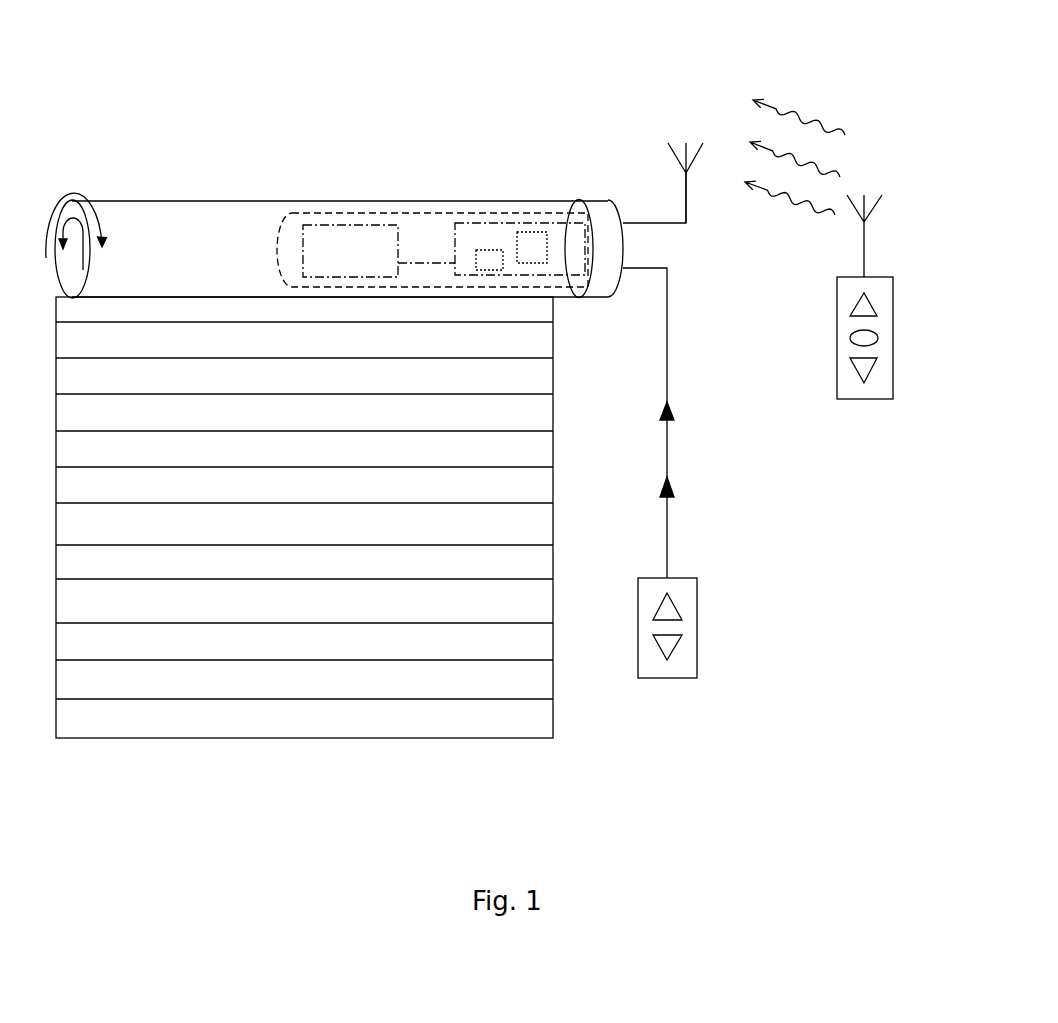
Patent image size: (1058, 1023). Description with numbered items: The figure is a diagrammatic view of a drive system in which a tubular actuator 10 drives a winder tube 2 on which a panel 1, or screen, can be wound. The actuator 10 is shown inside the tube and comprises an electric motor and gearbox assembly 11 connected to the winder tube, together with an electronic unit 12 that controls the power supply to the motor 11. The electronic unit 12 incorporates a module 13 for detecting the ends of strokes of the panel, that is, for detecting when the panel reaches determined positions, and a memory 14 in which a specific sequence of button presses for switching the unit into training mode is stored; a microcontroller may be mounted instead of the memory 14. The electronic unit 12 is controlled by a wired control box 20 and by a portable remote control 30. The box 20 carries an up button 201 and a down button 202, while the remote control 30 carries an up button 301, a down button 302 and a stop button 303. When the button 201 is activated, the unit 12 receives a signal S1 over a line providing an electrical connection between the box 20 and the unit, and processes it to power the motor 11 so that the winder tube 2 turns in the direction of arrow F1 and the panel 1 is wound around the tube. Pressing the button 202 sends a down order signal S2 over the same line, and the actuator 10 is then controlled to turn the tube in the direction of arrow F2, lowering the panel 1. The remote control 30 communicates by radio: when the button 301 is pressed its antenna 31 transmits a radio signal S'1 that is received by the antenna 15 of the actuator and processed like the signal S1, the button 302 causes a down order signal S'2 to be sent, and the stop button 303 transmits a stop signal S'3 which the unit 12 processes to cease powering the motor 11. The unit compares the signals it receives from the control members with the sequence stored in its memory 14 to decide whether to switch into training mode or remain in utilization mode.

The panel 1 is at (275, 675).
The winder tube 2 is at (168, 232).
The tubular actuator 10 is at (407, 238).
The electric motor and gearbox assembly 11 is at (340, 248).
The electronic unit 12 is at (463, 237).
The end-of-stroke detection module 13 is at (497, 252).
The memory 14 is at (533, 243).
The antenna 15 is at (693, 140).
The wired control box 20 is at (684, 697).
The up button 201 is at (665, 610).
The down button 202 is at (665, 640).
The portable remote control 30 is at (865, 423).
The up button 301 is at (852, 315).
The down button 302 is at (853, 370).
The stop button 303 is at (860, 342).
The antenna 31 is at (876, 192).
The arrow F1 is at (76, 205).
The arrow F2 is at (73, 255).
The signal S1 is at (644, 403).
The down order signal S2 is at (644, 482).
The radio signal S'1 is at (774, 198).
The down order signal S'2 is at (779, 154).
The stop signal S'3 is at (783, 111).